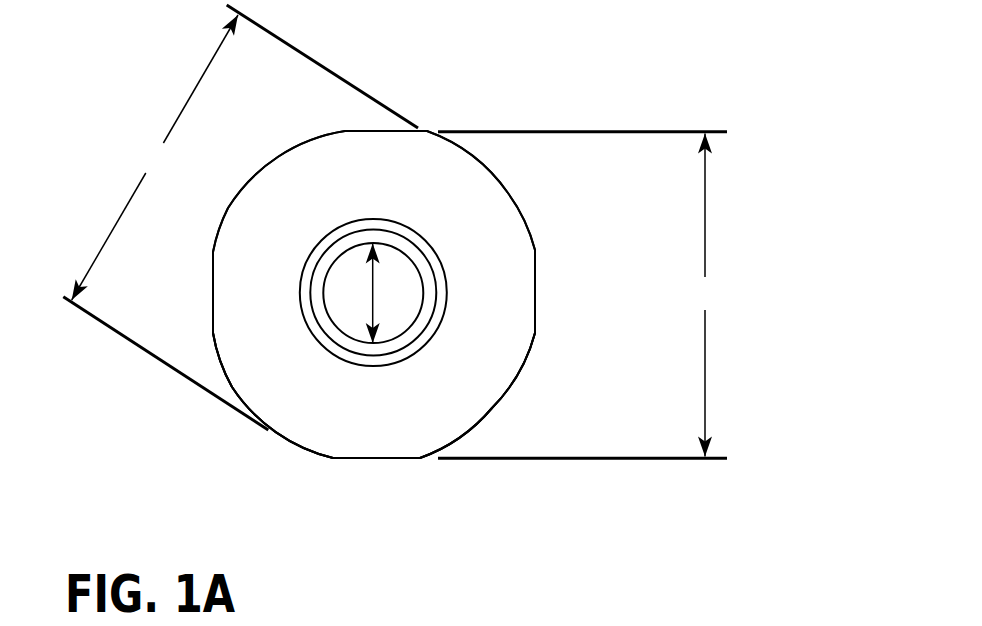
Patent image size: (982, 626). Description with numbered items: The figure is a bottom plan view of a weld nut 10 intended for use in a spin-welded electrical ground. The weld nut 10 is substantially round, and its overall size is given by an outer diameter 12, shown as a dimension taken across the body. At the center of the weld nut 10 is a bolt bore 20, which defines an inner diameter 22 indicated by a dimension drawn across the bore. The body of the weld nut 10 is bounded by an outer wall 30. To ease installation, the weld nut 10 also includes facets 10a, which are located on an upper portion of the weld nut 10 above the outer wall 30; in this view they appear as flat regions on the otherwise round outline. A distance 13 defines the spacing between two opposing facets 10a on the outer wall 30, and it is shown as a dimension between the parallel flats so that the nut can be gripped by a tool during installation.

The weld nut 10 is at (782, 140).
The facets 10a is at (235, 387).
The outer diameter 12 is at (240, 217).
The distance 13 is at (582, 295).
The bolt bore 20 is at (396, 273).
The inner diameter 22 is at (373, 292).
The outer wall 30 is at (490, 233).